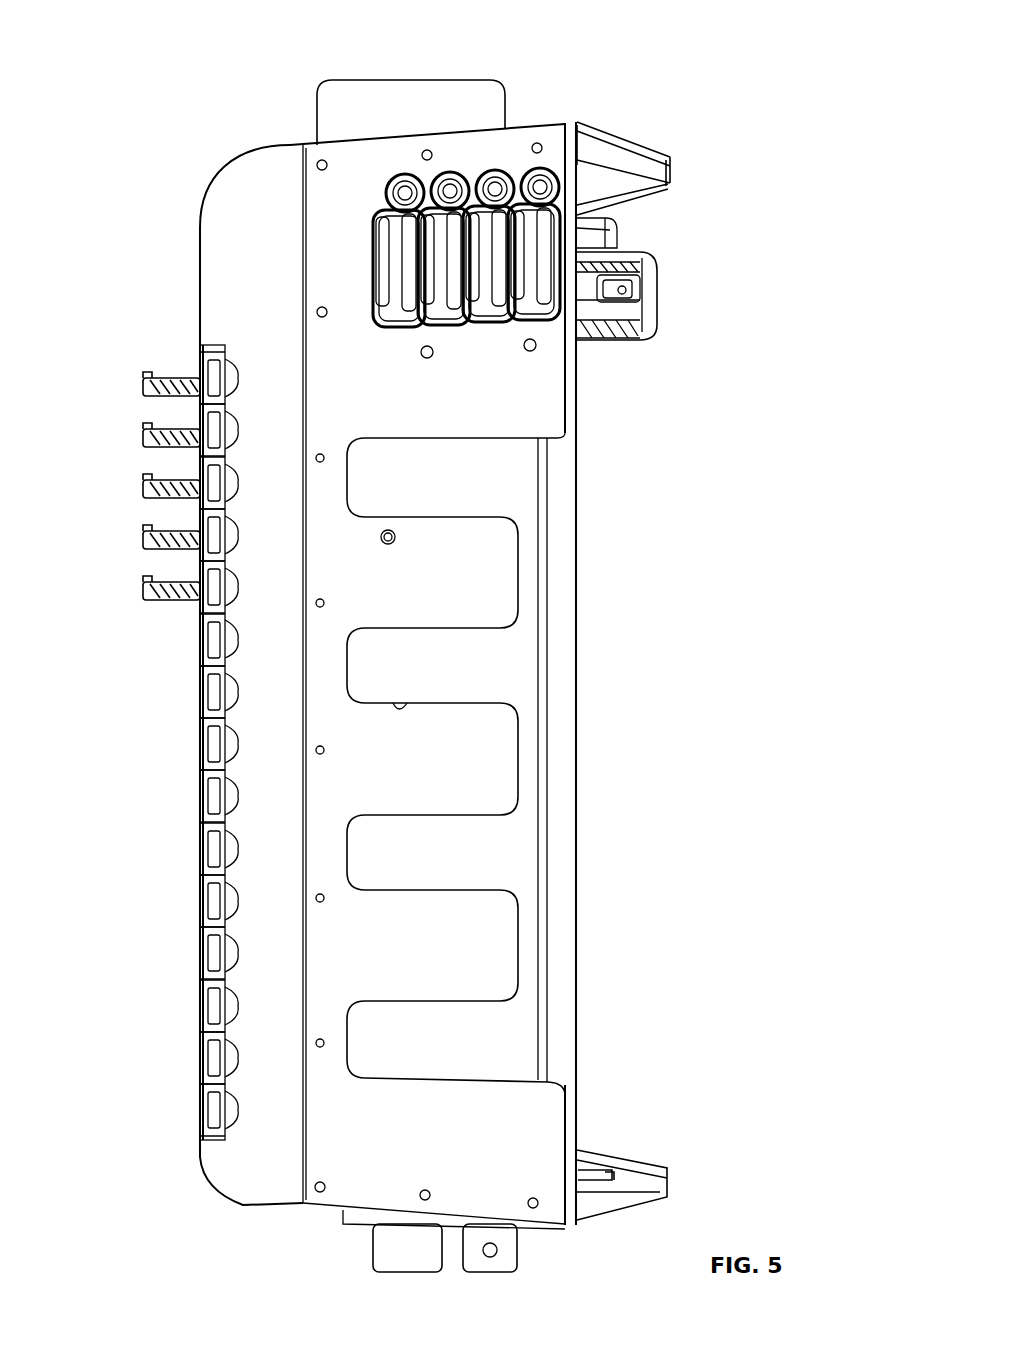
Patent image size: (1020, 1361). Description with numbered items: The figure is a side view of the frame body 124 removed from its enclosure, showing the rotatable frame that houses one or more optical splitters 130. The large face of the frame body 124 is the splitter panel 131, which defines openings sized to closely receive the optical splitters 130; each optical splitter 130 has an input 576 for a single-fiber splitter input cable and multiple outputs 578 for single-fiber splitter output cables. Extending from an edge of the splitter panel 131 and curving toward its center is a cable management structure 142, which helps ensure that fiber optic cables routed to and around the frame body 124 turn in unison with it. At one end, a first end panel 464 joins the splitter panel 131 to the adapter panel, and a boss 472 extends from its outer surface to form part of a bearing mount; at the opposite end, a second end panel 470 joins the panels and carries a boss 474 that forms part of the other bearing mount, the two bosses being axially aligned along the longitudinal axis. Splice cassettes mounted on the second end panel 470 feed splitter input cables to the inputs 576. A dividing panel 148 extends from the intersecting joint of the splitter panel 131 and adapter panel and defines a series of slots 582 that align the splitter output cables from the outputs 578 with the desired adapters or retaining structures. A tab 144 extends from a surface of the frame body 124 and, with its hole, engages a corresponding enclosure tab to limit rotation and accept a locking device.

The frame body 124 is at (143, 88).
The boss 472 is at (460, 95).
The first end panel 464 is at (590, 125).
The splitter outputs 578 is at (580, 215).
The splitter input 576 is at (622, 237).
The optical splitter 130 is at (650, 292).
The splitter panel 131 is at (520, 382).
The cable management structure 142 is at (447, 468).
The dividing panel 148 is at (250, 262).
The slots 582 is at (205, 800).
The second end panel 470 is at (640, 1190).
The boss 474 is at (380, 1245).
The tab 144 is at (510, 1245).